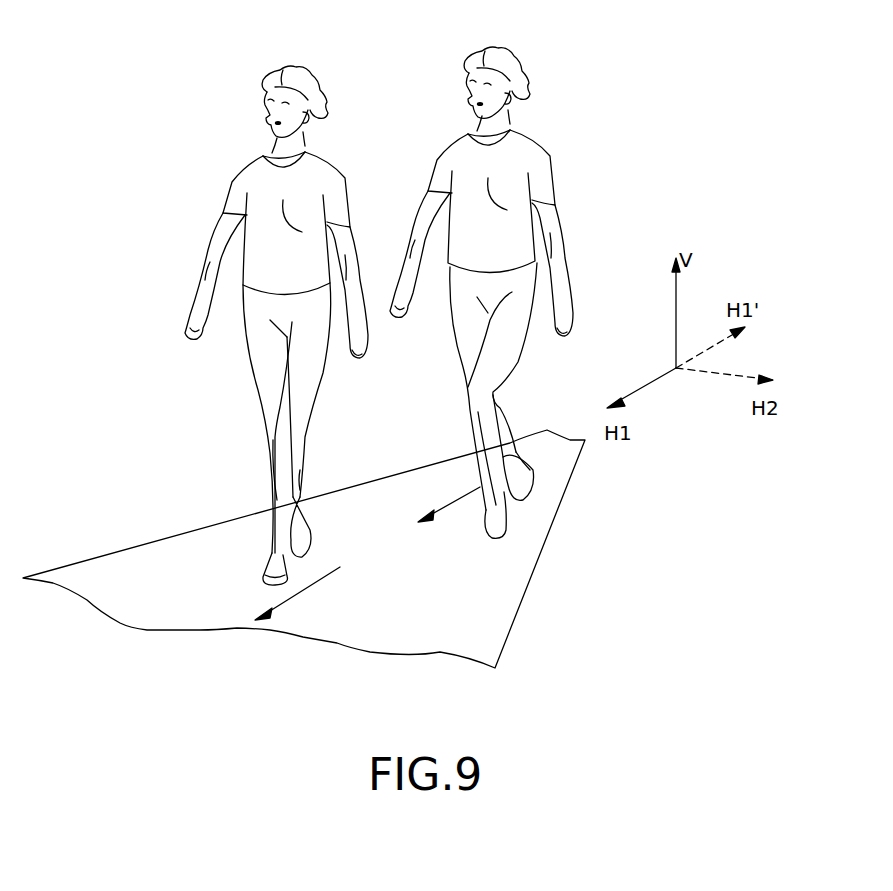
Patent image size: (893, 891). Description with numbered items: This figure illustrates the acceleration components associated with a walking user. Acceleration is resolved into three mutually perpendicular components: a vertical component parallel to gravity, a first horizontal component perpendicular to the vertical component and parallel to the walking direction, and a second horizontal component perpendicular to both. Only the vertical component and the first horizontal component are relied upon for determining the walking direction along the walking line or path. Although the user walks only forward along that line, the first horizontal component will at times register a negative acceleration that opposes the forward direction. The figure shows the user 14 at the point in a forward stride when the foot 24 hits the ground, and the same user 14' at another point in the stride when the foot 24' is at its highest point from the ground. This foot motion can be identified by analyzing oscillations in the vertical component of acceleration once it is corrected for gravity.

The user 14 is at (270, 308).
The user 14' is at (478, 280).
The foot 24 is at (243, 528).
The foot 24' is at (558, 500).